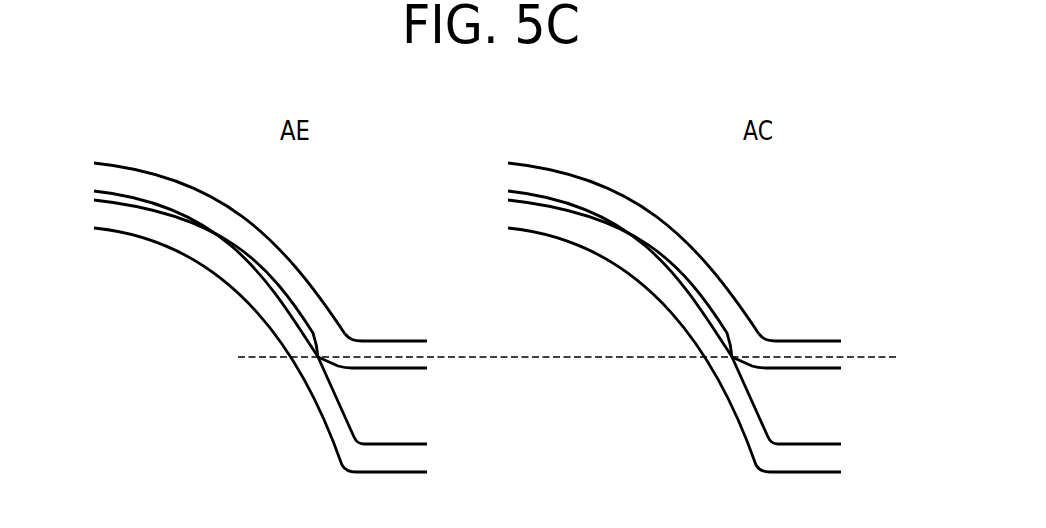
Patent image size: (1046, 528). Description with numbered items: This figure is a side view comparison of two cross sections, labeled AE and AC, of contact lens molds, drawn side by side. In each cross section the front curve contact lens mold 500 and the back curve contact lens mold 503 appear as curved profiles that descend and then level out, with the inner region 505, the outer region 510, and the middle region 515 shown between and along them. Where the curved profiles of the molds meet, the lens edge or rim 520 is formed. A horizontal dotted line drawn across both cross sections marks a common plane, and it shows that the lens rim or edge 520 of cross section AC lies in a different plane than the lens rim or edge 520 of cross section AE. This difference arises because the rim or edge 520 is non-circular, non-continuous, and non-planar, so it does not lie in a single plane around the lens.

The front curve contact lens mold 500 is at (227, 222).
The back curve contact lens mold 503 is at (188, 256).
The inner region 505 is at (284, 284).
The outer region 510 is at (376, 370).
The middle region 515 is at (338, 366).
The lens edge or rim 520 is at (345, 328).